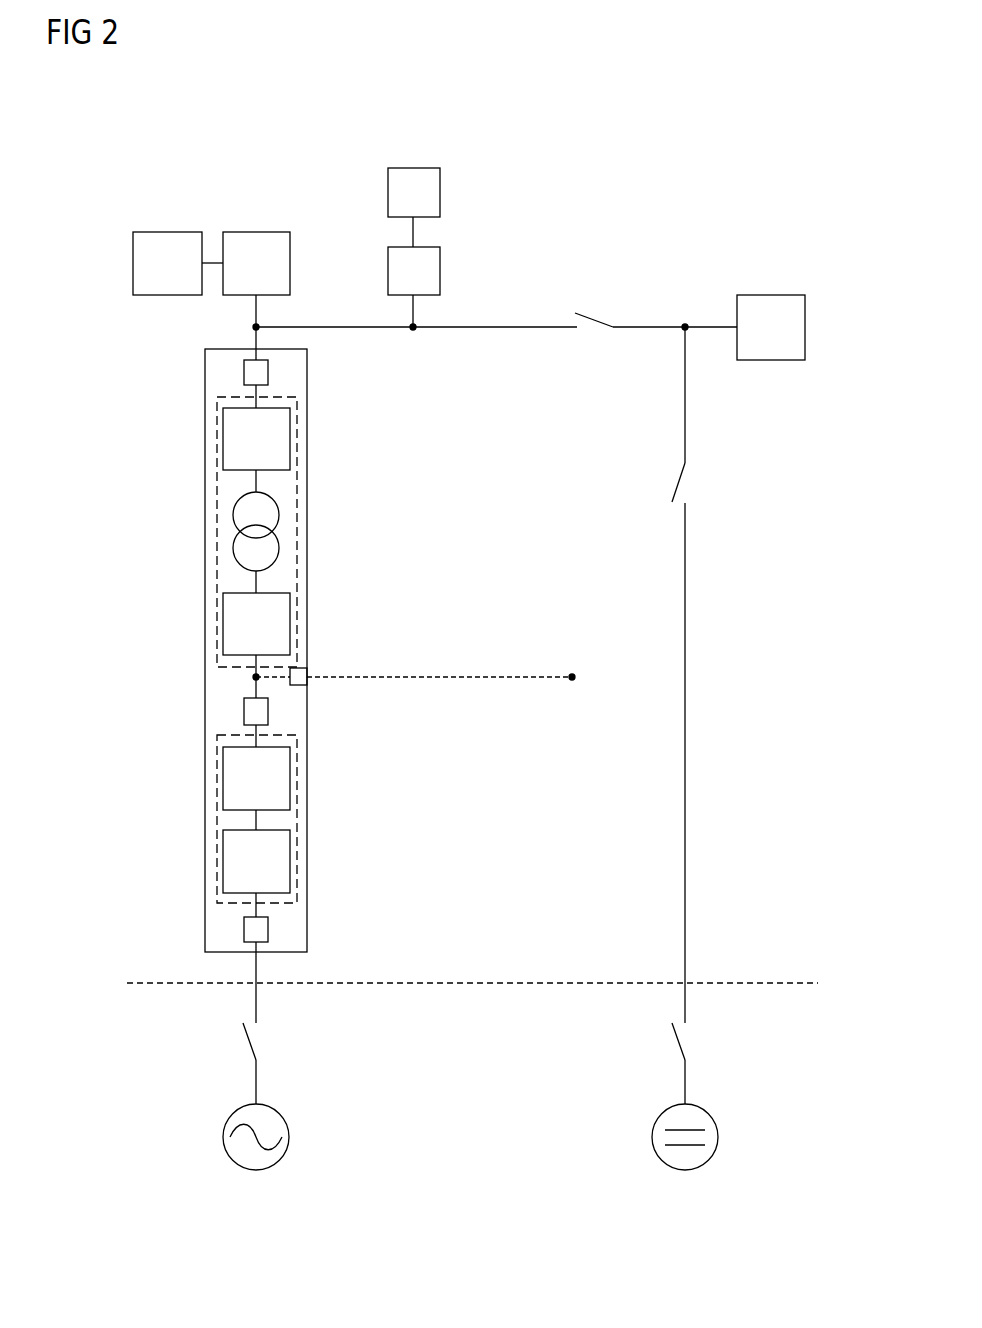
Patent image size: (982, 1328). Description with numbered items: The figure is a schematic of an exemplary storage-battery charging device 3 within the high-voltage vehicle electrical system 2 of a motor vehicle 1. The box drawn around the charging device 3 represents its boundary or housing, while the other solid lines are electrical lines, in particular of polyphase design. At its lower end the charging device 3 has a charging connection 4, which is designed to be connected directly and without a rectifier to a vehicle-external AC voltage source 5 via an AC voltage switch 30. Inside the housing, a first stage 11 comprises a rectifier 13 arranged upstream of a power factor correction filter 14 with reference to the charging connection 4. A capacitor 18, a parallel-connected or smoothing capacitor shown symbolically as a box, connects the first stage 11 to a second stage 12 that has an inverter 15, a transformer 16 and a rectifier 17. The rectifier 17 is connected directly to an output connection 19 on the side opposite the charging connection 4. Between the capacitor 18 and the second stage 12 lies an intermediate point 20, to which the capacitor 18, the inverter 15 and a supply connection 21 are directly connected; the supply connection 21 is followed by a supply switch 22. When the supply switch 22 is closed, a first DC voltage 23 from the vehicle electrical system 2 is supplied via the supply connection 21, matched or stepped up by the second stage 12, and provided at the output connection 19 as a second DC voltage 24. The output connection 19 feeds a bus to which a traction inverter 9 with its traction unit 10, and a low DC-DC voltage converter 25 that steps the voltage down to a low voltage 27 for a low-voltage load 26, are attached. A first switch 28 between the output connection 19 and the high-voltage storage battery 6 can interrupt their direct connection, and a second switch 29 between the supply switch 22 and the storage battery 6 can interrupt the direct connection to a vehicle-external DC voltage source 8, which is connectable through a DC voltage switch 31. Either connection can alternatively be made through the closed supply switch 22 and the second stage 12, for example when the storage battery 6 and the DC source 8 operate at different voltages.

The motor vehicle 1 is at (762, 944).
The high-voltage vehicle electrical system 2 is at (703, 431).
The storage-battery charging device 3 is at (307, 930).
The charging connection 4 is at (244, 929).
The AC voltage source 5 is at (256, 1170).
The high-voltage storage battery 6 is at (770, 295).
The DC voltage source 8 is at (685, 1170).
The traction inverter 9 is at (256, 232).
The traction unit 10 is at (166, 232).
The first stage 11 is at (297, 817).
The second stage 12 is at (297, 528).
The rectifier 13 is at (223, 856).
The power factor correction filter 14 is at (223, 784).
The inverter 15 is at (223, 630).
The transformer 16 is at (283, 519).
The rectifier 17 is at (223, 442).
The capacitor 18 is at (244, 712).
The output connection 19 is at (244, 373).
The intermediate point 20 is at (256, 677).
The supply connection 21 is at (296, 686).
The supply switch 22 is at (383, 677).
The first DC voltage 23 is at (317, 661).
The second DC voltage 24 is at (246, 344).
The low DC-DC voltage converter 25 is at (440, 265).
The low-voltage load 26 is at (440, 183).
The low voltage 27 is at (443, 228).
The first switch 28 is at (598, 314).
The second switch 29 is at (686, 477).
The AC voltage switch 30 is at (247, 1047).
The DC voltage switch 31 is at (677, 1047).